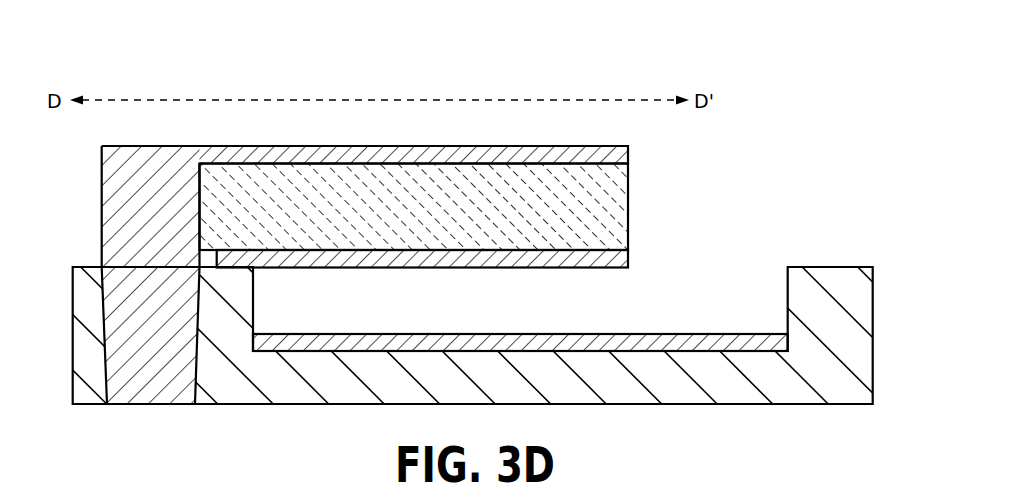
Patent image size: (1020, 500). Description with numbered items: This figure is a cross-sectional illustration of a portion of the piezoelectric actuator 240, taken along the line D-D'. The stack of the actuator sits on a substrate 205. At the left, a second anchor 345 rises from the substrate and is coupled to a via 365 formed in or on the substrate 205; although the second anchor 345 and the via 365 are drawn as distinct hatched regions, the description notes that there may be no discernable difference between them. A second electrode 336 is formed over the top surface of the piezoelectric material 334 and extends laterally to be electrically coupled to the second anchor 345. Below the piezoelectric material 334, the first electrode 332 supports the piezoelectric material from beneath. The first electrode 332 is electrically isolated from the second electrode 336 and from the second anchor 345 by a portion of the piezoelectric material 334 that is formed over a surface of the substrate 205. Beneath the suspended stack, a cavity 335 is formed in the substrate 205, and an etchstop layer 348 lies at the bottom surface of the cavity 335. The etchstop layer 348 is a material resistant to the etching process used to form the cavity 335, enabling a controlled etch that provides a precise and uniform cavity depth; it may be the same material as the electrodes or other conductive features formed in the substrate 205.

The piezoelectric actuator 240 is at (771, 58).
The substrate 205 is at (800, 383).
The via 365 is at (167, 337).
The second anchor 345 is at (167, 214).
The second electrode 336 is at (537, 146).
The piezoelectric material 334 is at (612, 212).
The first electrode 332 is at (587, 262).
The etchstop layer 348 is at (692, 334).
The cavity 335 is at (739, 252).